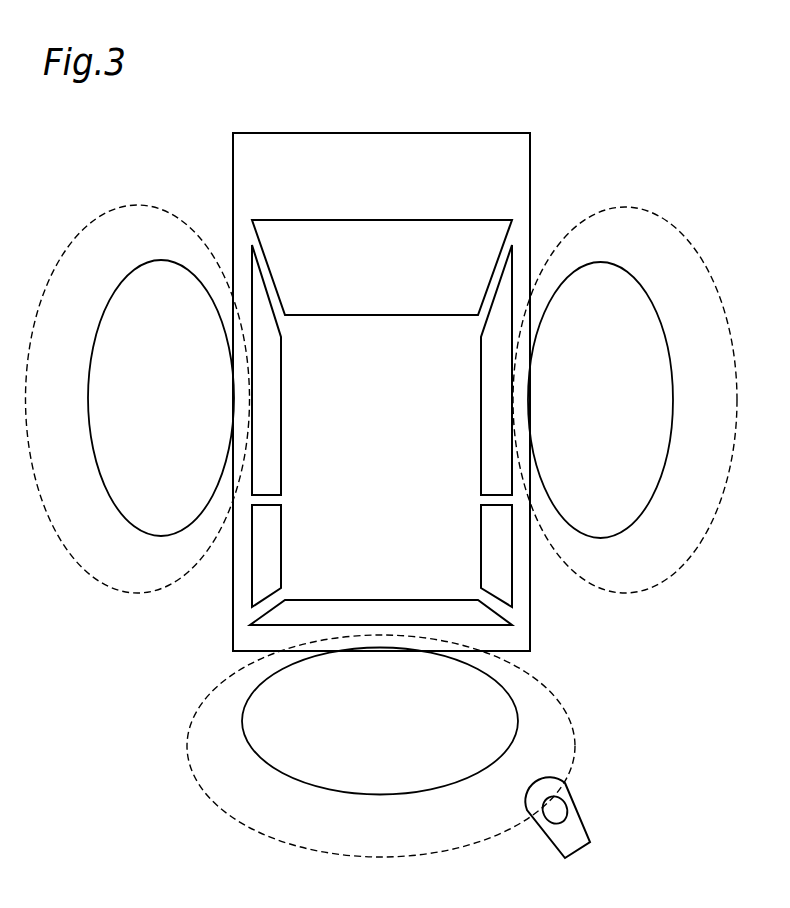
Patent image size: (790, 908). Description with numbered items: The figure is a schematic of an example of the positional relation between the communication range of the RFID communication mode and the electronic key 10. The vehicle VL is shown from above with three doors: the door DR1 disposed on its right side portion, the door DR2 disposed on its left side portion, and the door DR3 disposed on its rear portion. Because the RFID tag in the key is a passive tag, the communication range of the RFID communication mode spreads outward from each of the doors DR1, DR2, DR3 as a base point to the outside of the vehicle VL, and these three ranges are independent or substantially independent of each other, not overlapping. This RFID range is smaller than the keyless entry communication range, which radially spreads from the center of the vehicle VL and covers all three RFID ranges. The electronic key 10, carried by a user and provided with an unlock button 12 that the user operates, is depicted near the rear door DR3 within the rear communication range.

The vehicle VL is at (477, 117).
The door DR1 is at (529, 358).
The door DR2 is at (233, 358).
The door DR3 is at (368, 645).
The electronic key 10 is at (576, 827).
The unlock button 12 is at (550, 824).